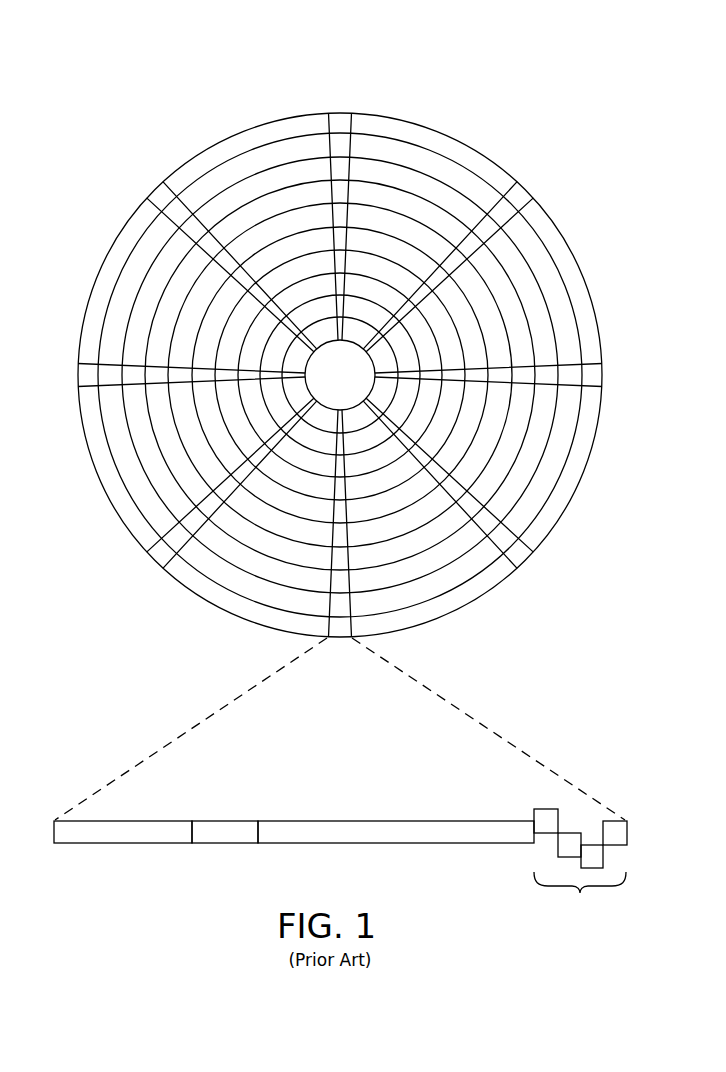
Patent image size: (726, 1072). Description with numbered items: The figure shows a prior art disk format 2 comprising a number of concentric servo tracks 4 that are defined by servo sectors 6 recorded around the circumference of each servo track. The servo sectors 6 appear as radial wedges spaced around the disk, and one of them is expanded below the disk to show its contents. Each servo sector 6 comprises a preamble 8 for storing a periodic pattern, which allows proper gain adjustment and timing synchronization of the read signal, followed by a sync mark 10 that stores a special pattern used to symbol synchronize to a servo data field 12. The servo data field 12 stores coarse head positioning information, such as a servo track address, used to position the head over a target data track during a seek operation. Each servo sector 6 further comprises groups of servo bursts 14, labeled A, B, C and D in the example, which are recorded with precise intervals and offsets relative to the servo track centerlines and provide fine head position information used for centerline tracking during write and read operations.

The disk format 2 is at (147, 115).
The servo tracks 4 is at (430, 166).
The servo sectors 6 is at (340, 122).
The preamble 8 is at (107, 844).
The sync mark 10 is at (223, 844).
The servo data field 12 is at (387, 844).
The servo bursts 14 is at (526, 796).